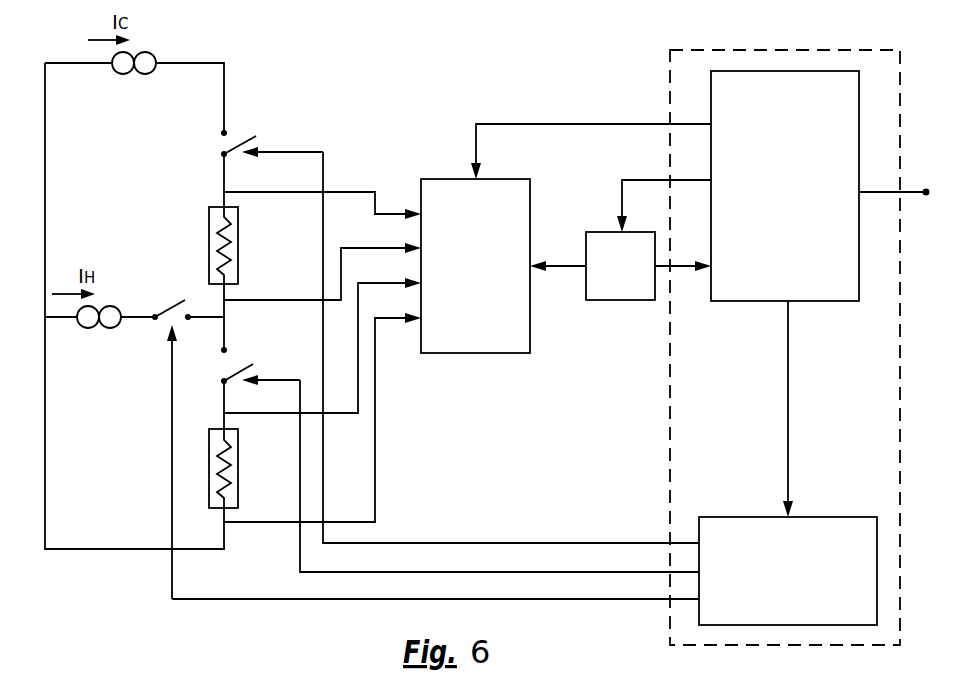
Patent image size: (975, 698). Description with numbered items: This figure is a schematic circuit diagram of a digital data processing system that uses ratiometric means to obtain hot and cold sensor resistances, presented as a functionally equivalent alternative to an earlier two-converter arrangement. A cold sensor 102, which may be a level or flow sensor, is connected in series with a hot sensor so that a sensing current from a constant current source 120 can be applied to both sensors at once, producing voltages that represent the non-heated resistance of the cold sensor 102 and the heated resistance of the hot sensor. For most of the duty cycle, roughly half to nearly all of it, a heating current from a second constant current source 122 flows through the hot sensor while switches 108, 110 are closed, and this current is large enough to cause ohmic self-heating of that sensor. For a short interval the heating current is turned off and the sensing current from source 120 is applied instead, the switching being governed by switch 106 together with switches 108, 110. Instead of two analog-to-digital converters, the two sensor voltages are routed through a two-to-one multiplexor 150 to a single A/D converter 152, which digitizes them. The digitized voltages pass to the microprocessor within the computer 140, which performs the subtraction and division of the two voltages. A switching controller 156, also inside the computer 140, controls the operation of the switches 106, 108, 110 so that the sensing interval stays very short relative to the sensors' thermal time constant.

The cold sensor 102 is at (209, 222).
The switch 106 is at (230, 149).
The switch 108 is at (178, 308).
The switch 110 is at (243, 371).
The constant current source 120 is at (156, 56).
The constant current source 122 is at (111, 330).
The computer 140 is at (757, 50).
The 2 to 1 multiplexor 150 is at (441, 179).
The A/D converter 152 is at (601, 232).
The switching controller 156 is at (847, 517).